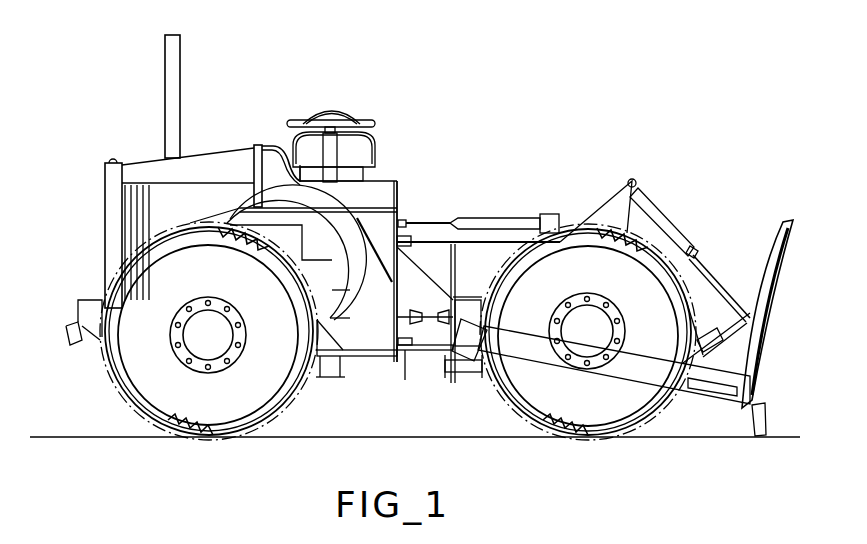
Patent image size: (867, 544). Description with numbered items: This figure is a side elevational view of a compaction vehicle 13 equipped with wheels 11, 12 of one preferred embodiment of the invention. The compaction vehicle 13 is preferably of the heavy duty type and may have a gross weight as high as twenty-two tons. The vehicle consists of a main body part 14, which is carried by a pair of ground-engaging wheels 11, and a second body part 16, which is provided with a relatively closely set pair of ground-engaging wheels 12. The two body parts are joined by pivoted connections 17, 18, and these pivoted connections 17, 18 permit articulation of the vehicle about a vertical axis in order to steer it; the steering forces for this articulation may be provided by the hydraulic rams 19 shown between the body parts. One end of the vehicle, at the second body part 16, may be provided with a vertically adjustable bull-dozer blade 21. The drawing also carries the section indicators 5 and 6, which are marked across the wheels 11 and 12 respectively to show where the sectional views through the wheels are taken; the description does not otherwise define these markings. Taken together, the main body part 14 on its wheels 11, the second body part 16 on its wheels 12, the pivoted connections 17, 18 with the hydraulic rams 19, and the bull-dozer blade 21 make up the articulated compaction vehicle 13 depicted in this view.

The section line 5- 5 is at (209, 233).
The section line 6- 6 is at (587, 233).
The ground-engaging wheels 11 is at (118, 378).
The ground-engaging wheels 12 is at (647, 413).
The compaction vehicle 13 is at (422, 148).
The main body part 14 is at (211, 152).
The second body part 16 is at (603, 193).
The pivoted connection 17 is at (405, 236).
The pivoted connection 18 is at (425, 371).
The hydraulic rams 19 is at (486, 217).
The bull-dozer blade 21 is at (767, 262).